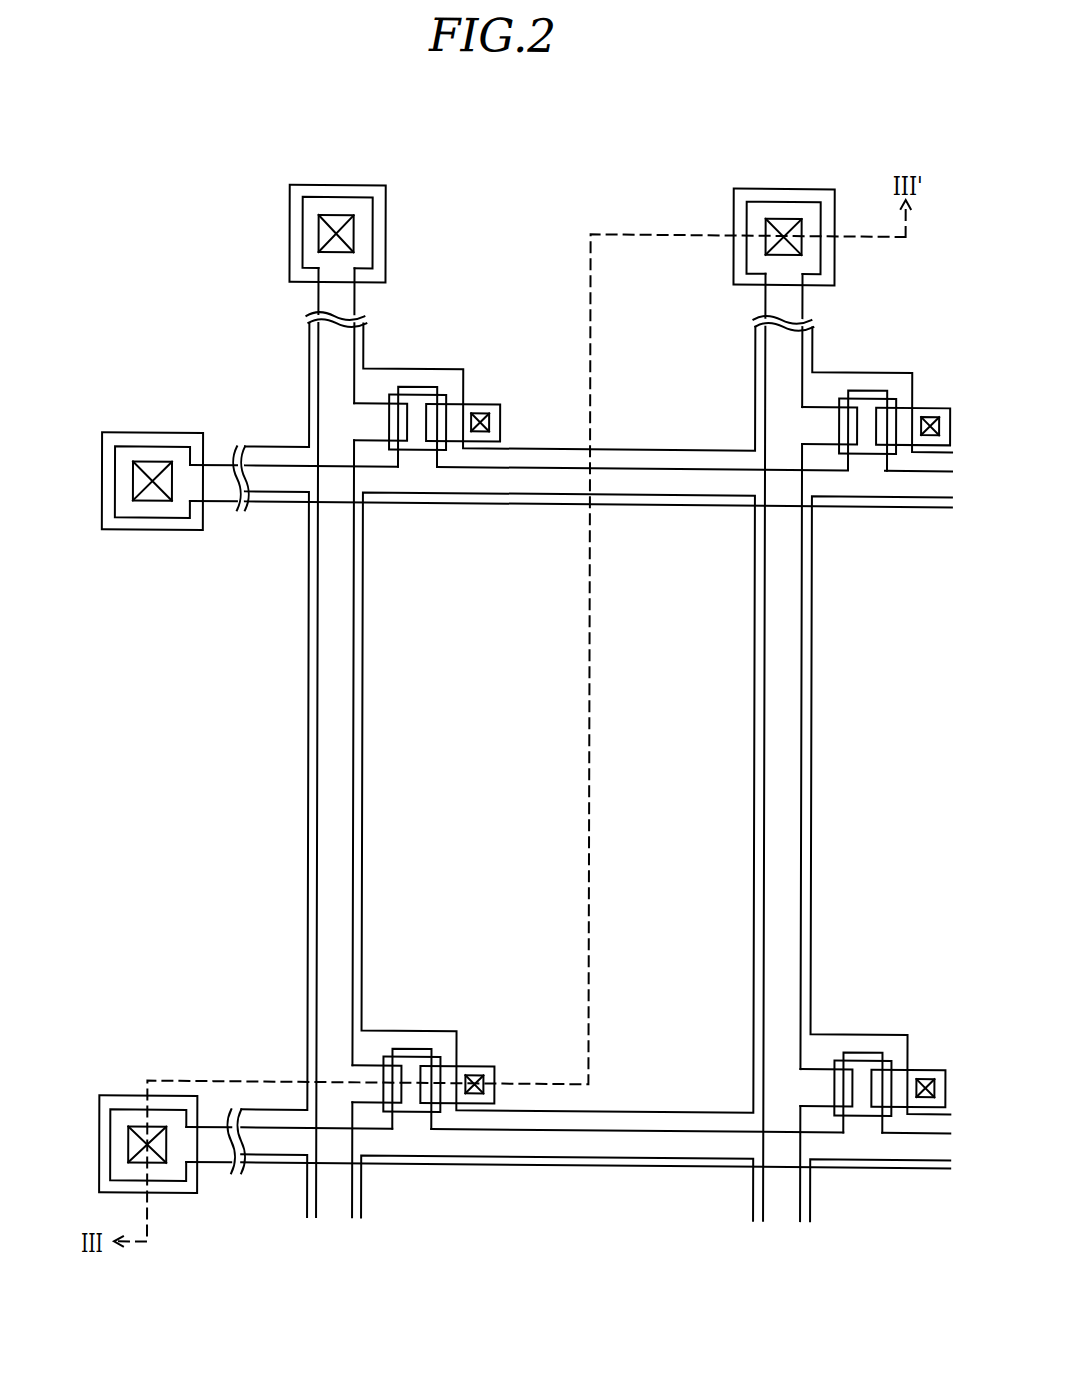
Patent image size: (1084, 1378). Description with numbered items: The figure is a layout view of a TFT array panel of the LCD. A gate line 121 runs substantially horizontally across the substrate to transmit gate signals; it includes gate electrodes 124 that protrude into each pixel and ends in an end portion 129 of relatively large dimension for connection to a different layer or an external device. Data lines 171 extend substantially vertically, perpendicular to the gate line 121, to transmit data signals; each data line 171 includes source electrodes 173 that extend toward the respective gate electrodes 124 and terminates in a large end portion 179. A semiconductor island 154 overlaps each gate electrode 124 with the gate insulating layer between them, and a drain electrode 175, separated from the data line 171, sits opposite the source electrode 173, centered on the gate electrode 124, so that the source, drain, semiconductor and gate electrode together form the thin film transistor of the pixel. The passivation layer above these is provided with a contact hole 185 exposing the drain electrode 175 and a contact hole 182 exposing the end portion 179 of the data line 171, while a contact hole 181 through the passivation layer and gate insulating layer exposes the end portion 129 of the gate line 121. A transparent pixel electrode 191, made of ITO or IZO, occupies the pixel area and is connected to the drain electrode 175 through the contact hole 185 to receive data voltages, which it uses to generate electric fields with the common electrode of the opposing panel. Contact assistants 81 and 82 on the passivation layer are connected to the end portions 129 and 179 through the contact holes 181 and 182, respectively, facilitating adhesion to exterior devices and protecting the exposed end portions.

The contact assistant 81 is at (184, 1194).
The contact assistant 82 is at (733, 200).
The gate line 121 is at (632, 1166).
The gate electrode 124 is at (395, 1115).
The end portion 129 is at (112, 1126).
The semiconductor island 154 is at (420, 1112).
The data line 171 is at (318, 757).
The source electrode 173 is at (365, 1102).
The drain electrode 175 is at (482, 1105).
The end portion 179 is at (810, 198).
The contact hole 181 is at (130, 1158).
The contact hole 182 is at (778, 216).
The contact hole 185 is at (477, 1075).
The pixel electrode 191 is at (363, 825).